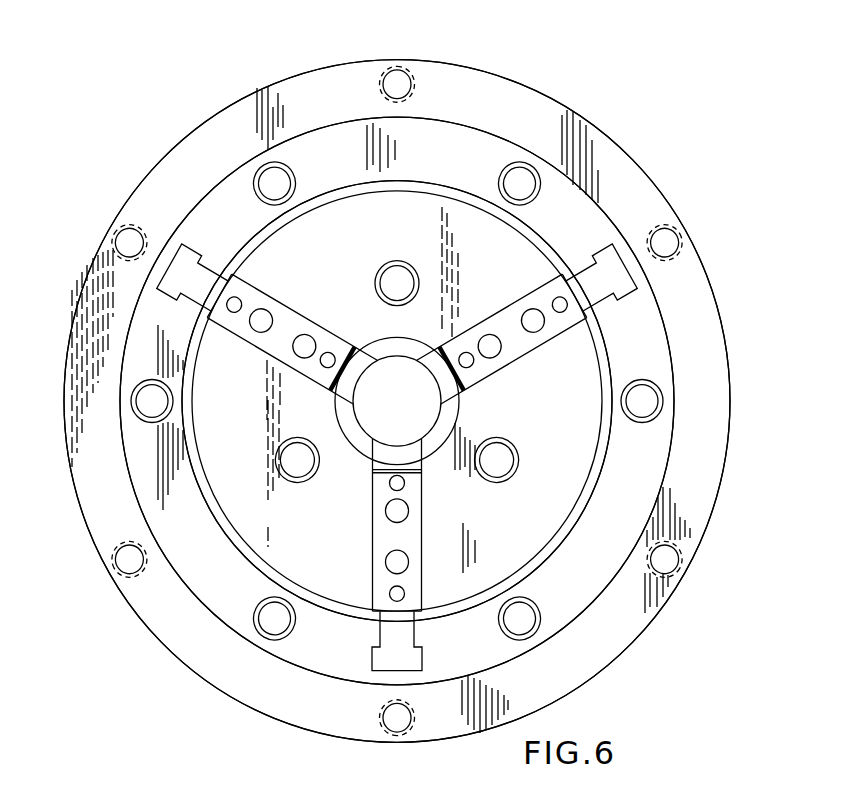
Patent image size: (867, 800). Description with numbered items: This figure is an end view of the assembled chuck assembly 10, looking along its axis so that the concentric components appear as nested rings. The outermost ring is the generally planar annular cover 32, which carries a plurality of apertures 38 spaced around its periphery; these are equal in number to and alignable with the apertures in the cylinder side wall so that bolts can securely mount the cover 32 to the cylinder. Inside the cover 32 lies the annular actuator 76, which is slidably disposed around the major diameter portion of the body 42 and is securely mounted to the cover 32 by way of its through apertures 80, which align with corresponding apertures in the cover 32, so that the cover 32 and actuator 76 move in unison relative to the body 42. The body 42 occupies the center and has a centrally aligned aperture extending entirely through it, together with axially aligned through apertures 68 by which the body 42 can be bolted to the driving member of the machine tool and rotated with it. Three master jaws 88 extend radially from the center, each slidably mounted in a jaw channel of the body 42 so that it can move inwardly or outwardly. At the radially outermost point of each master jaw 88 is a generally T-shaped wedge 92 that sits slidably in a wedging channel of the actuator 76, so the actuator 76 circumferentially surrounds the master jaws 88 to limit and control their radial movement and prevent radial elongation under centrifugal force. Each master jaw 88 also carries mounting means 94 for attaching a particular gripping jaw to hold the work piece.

The chuck assembly 10 is at (615, 125).
The cover 32 is at (488, 67).
The apertures 38 is at (398, 73).
The body 42 is at (548, 546).
The through apertures 68 is at (393, 270).
The actuator 76 is at (665, 376).
The through apertures 80 is at (262, 171).
The master jaws 88 is at (518, 298).
The T-shaped wedge 92 is at (183, 270).
The mounting means 94 is at (307, 343).